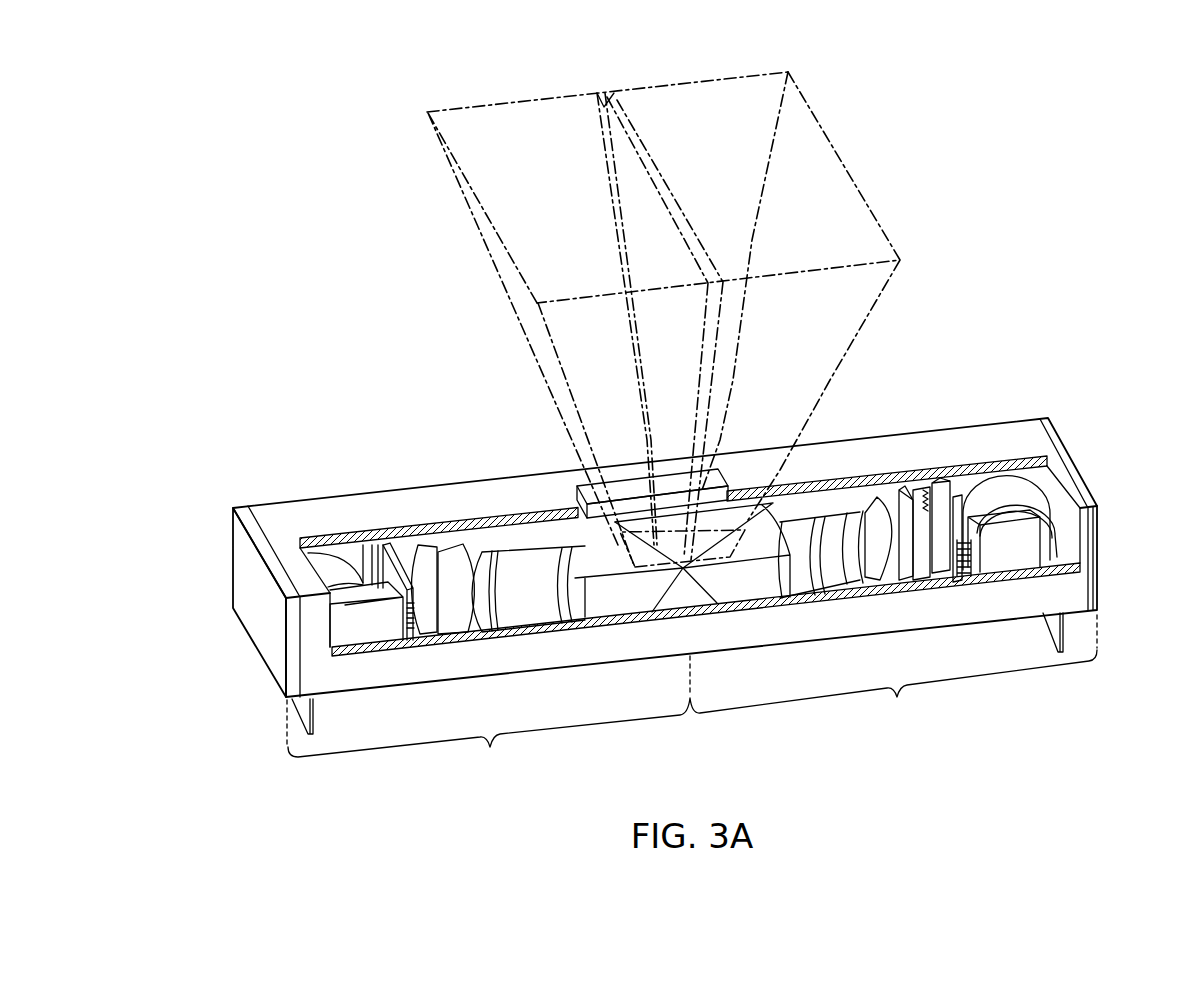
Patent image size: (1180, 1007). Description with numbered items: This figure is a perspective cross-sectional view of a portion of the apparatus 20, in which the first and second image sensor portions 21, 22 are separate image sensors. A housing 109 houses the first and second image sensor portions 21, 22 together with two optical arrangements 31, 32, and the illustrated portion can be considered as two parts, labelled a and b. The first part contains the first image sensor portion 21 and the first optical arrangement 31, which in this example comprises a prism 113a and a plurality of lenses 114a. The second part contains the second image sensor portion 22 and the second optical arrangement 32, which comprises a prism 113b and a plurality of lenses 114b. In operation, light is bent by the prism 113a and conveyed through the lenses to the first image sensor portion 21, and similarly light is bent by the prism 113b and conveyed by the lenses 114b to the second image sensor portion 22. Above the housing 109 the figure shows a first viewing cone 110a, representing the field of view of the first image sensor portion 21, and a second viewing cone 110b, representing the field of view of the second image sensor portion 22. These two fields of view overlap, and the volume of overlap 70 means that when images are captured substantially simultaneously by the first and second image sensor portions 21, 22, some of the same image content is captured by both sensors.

The apparatus 20 is at (208, 764).
The first image sensor portion 21 is at (945, 485).
The second image sensor portion 22 is at (383, 545).
The first optical arrangement 31 is at (940, 329).
The second optical arrangement 32 is at (455, 385).
The volume of overlap 70 is at (617, 108).
The housing 109 is at (1093, 530).
The first viewing cone 110a is at (815, 155).
The second viewing cone 110b is at (497, 188).
The prism 113a is at (797, 527).
The prism 113b is at (565, 530).
The plurality of lenses 114a is at (887, 508).
The plurality of lenses 114b is at (497, 560).